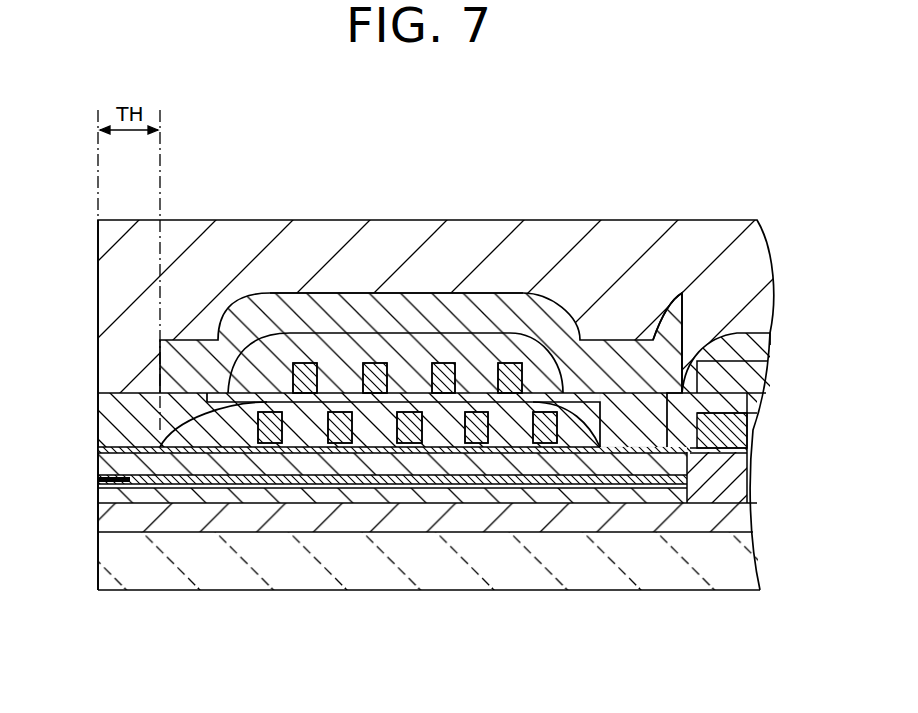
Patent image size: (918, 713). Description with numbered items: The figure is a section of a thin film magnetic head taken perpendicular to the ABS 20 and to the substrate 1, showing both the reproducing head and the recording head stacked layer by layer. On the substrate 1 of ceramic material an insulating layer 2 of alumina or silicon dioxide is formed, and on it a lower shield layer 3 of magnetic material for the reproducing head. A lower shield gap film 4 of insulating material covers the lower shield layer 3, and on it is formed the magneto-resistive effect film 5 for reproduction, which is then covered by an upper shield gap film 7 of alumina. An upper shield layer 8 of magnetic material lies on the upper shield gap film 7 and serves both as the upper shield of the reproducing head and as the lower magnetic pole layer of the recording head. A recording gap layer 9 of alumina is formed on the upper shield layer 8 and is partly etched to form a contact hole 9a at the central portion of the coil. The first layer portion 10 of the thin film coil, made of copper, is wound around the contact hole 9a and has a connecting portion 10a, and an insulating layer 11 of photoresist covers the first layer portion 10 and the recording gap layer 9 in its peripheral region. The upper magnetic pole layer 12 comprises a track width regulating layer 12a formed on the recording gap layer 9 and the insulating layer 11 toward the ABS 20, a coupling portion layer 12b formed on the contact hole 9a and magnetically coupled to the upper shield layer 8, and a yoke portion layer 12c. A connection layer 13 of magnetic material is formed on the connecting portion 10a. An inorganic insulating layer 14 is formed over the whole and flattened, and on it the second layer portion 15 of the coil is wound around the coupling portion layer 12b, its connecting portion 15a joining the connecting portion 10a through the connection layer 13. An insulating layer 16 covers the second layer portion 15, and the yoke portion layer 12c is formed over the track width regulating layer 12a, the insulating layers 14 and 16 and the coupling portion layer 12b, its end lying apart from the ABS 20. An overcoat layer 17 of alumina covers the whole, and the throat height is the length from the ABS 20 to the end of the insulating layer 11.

The substrate 1 is at (462, 580).
The insulating layer 2 is at (508, 522).
The lower shield layer 3 is at (557, 499).
The lower shield gap film 4 is at (160, 487).
The magneto-resistive effect film 5 is at (118, 487).
The upper shield gap film 7 is at (203, 494).
The upper shield layer 8 is at (280, 467).
The recording gap layer 9 is at (310, 452).
The contact hole 9a is at (623, 437).
The first layer portion of the thin film coil 10 is at (340, 434).
The connecting portion of the first layer portion 10a is at (738, 442).
The insulating layer 11 is at (383, 439).
The upper magnetic pole layer 12 is at (297, 291).
The track width regulating layer 12a is at (118, 442).
The coupling portion layer 12b is at (613, 452).
The yoke portion layer 12c is at (470, 305).
The connection layer 13 is at (702, 417).
The insulating layer 14 is at (672, 410).
The second layer portion of the thin film coil 15 is at (363, 360).
The connecting portion of the second layer portion 15a is at (737, 363).
The insulating layer 16 is at (405, 343).
The overcoat layer 17 is at (247, 240).
The ABS 20 is at (98, 458).